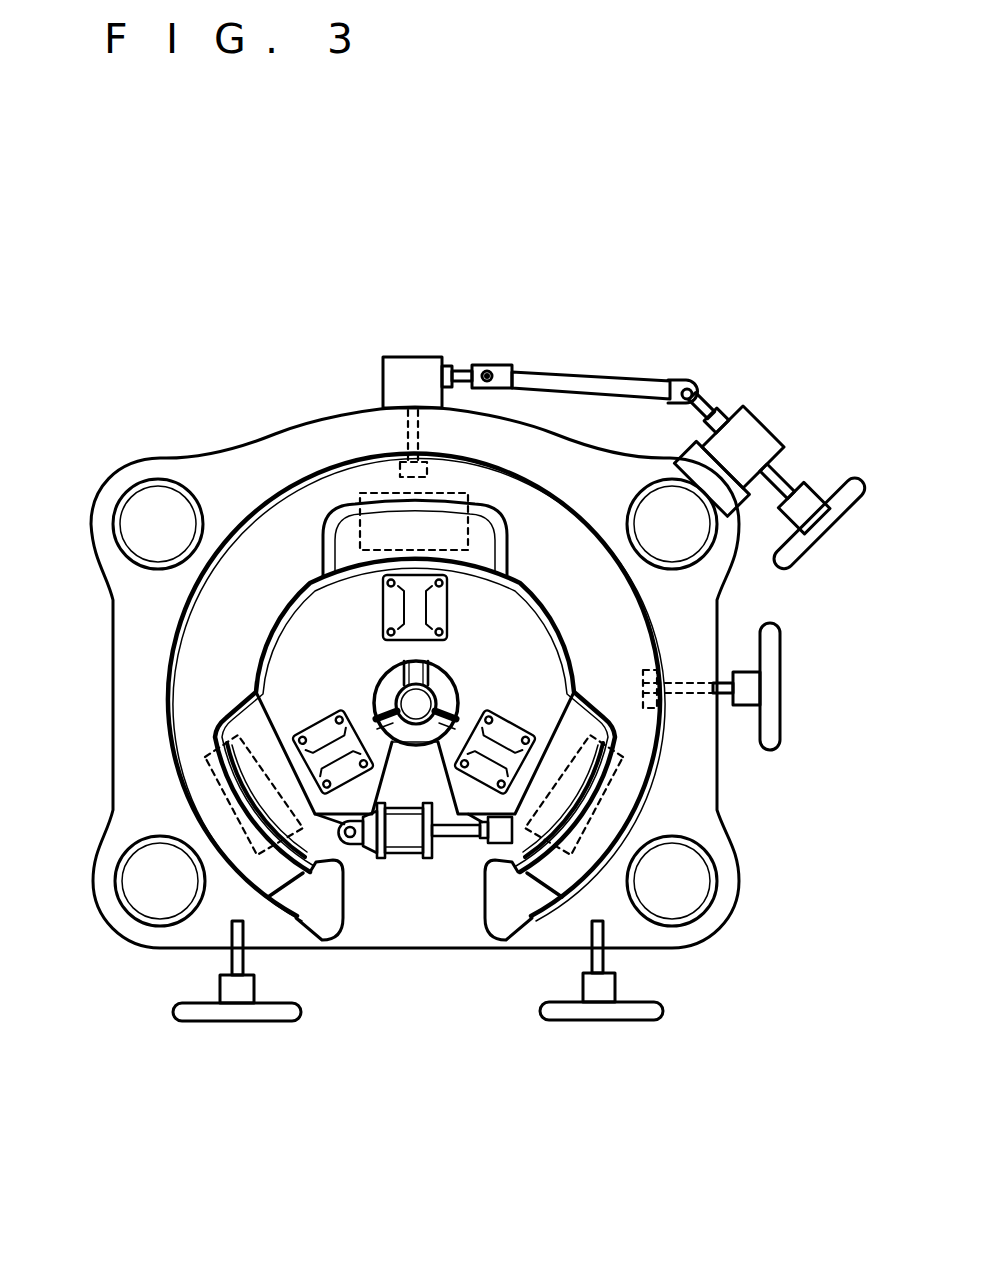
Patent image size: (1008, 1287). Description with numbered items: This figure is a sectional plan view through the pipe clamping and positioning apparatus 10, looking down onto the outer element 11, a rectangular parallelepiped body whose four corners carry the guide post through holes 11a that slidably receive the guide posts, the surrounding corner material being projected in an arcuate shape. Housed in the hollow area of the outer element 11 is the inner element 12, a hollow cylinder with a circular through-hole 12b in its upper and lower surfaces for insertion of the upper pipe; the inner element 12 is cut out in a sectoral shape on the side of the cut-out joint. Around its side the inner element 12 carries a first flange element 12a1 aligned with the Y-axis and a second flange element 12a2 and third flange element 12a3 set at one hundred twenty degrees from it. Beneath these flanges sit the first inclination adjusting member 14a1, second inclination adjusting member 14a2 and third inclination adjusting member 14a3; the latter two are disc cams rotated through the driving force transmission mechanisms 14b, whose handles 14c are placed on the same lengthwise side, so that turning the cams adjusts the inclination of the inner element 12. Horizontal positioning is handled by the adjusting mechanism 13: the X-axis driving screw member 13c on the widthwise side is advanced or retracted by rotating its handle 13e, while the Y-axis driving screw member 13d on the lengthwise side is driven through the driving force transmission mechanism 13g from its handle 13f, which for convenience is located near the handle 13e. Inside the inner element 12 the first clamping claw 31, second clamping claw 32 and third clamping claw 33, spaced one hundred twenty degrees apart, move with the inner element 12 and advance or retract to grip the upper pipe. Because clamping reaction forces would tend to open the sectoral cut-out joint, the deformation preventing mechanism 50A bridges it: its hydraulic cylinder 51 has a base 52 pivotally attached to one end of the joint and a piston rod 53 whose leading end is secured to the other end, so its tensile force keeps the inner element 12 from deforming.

The pipe clamping apparatus 10 is at (896, 209).
The outer element 11 is at (392, 677).
The guide post through hole 11a is at (415, 661).
The inner element 12 is at (416, 652).
The first flange element 12a1 is at (385, 473).
The second flange element 12a2 is at (341, 961).
The third flange element 12a3 is at (509, 959).
The circular through-hole 12b is at (462, 702).
The adjusting mechanism 13 is at (633, 570).
The driving screw member 13c is at (721, 700).
The driving screw member 13d is at (406, 442).
The handle 13e is at (833, 686).
The handle 13f is at (827, 550).
The driving force transmission mechanism 13g is at (675, 428).
The first inclination adjusting member 14a1 is at (372, 492).
The second inclination adjusting member 14a2 is at (252, 845).
The third inclination adjusting member 14a3 is at (583, 840).
The driving force transmission mechanism 14b is at (418, 1062).
The handle 14c is at (452, 1021).
The first clamping claw 31 is at (453, 663).
The second clamping claw 32 is at (379, 678).
The third clamping claw 33 is at (415, 767).
The deformation preventing mechanism 50A is at (413, 919).
The hydraulic cylinder 51 is at (408, 869).
The base 52 is at (349, 870).
The piston rod 53 is at (472, 881).